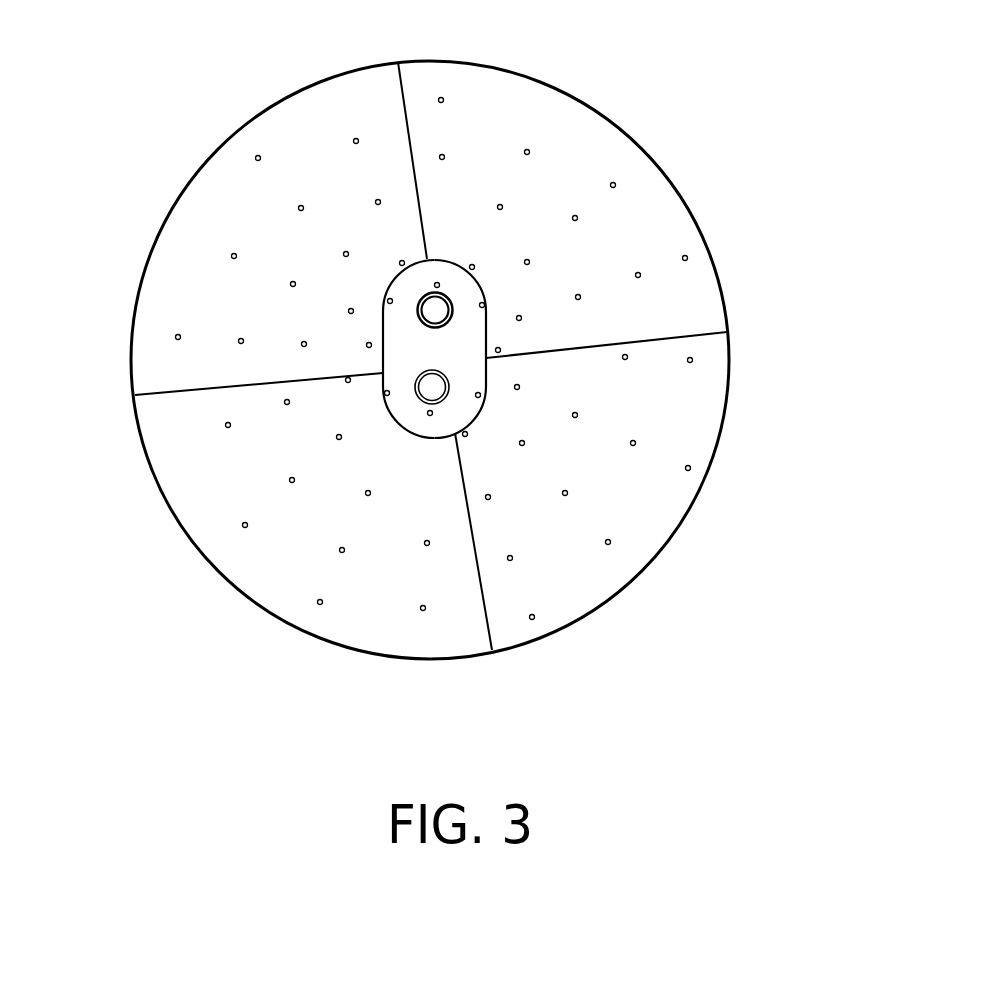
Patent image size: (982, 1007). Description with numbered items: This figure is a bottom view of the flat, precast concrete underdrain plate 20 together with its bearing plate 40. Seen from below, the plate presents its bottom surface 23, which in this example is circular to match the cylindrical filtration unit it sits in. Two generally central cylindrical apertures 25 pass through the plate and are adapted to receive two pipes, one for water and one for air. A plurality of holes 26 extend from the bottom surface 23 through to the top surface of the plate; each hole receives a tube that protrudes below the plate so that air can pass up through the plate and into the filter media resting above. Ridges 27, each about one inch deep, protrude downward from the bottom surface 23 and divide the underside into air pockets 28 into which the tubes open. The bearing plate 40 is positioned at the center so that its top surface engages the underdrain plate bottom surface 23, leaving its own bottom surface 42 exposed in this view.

The underdrain plate 20 is at (436, 338).
The bottom surface 23 is at (670, 510).
The cylindrical apertures 25 is at (413, 383).
The holes 26 is at (303, 207).
The ridges 27 is at (402, 93).
The air pockets 28 is at (228, 182).
The bearing plate 40 is at (397, 430).
The bottom surface 42 is at (473, 332).